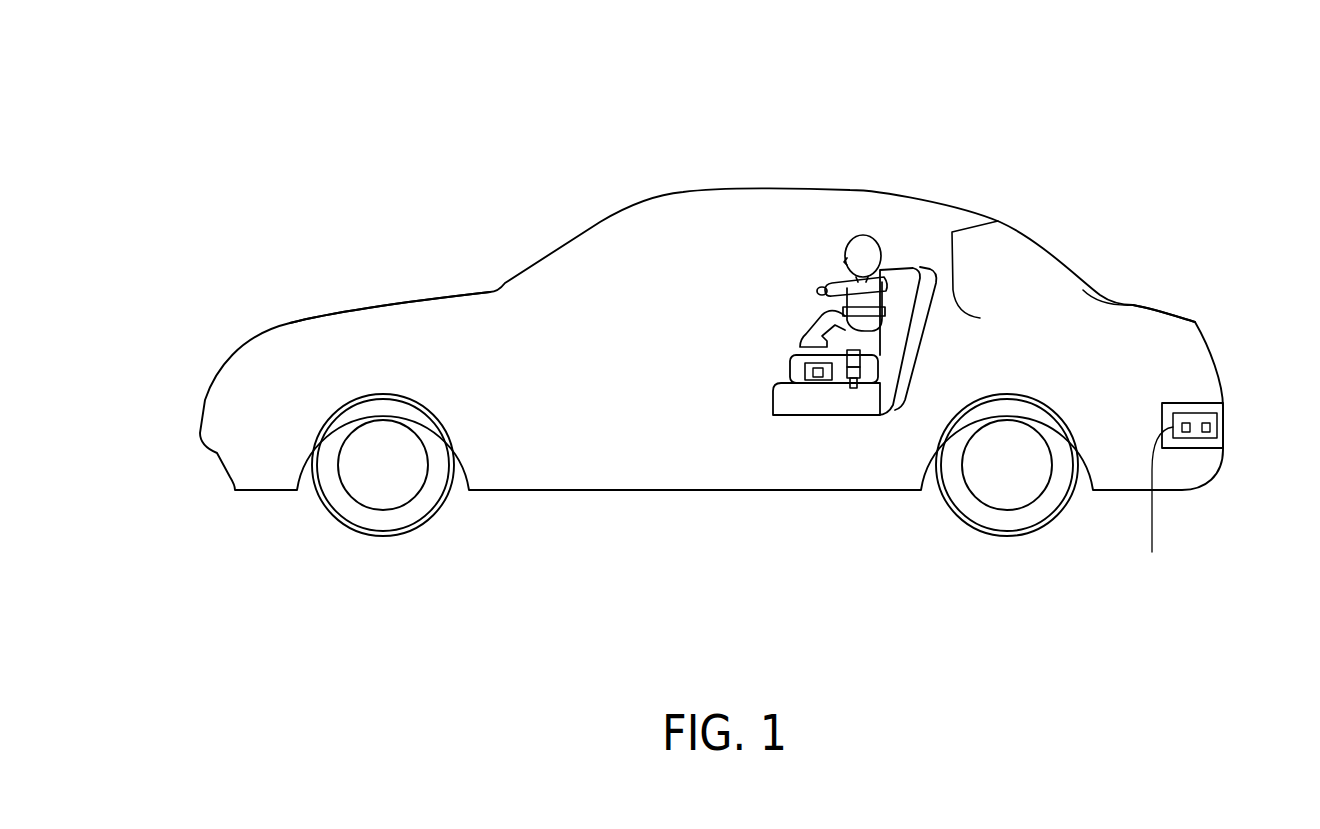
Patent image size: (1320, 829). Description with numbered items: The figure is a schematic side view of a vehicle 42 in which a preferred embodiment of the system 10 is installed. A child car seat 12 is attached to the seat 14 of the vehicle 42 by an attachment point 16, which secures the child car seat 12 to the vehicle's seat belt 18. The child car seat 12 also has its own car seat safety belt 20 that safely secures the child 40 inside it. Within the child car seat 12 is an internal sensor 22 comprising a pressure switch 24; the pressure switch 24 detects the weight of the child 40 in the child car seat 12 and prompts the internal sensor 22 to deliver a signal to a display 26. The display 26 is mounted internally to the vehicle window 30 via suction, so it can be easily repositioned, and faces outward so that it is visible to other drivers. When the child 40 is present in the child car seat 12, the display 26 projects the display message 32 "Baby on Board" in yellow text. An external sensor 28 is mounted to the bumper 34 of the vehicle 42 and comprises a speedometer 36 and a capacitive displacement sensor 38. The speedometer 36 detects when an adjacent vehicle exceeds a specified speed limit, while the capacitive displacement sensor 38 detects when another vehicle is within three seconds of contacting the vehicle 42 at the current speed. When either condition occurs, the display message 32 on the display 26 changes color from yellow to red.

The system 10 is at (236, 187).
The child car seat 12 is at (902, 283).
The seat 14 is at (928, 284).
The attachment point 16 is at (847, 363).
The seat belt 18 is at (853, 393).
The car seat safety belt 20 is at (843, 302).
The internal sensor 22 is at (805, 372).
The pressure switch 24 is at (818, 378).
The display 26 is at (1150, 307).
The external sensor 28 is at (1152, 552).
The vehicle window 30 is at (993, 238).
The display message 32 is at (1035, 268).
The bumper 34 is at (1193, 403).
The speedometer 36 is at (1185, 432).
The capacitive displacement sensor 38 is at (1207, 433).
The child 40 is at (860, 255).
The vehicle 42 is at (383, 307).